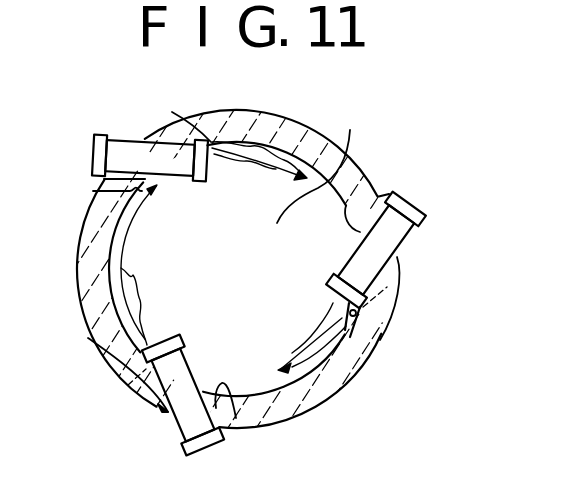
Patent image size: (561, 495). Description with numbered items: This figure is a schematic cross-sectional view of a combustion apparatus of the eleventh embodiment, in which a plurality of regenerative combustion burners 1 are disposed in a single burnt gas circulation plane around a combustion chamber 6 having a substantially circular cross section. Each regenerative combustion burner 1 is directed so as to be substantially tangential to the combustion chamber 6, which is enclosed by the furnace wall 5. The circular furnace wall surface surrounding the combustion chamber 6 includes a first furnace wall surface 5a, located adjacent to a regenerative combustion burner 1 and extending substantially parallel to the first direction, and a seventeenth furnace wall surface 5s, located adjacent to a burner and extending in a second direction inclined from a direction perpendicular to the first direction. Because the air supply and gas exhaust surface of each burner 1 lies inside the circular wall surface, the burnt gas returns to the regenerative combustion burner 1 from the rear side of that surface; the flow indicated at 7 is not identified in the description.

The regenerative combustion burner 1 is at (122, 155).
The furnace wall 5 is at (85, 263).
The first furnace wall surface 5a is at (178, 119).
The seventeenth furnace wall surface 5s is at (93, 191).
The combustion chamber 6 is at (317, 164).
The leakage flux 7 is at (227, 150).